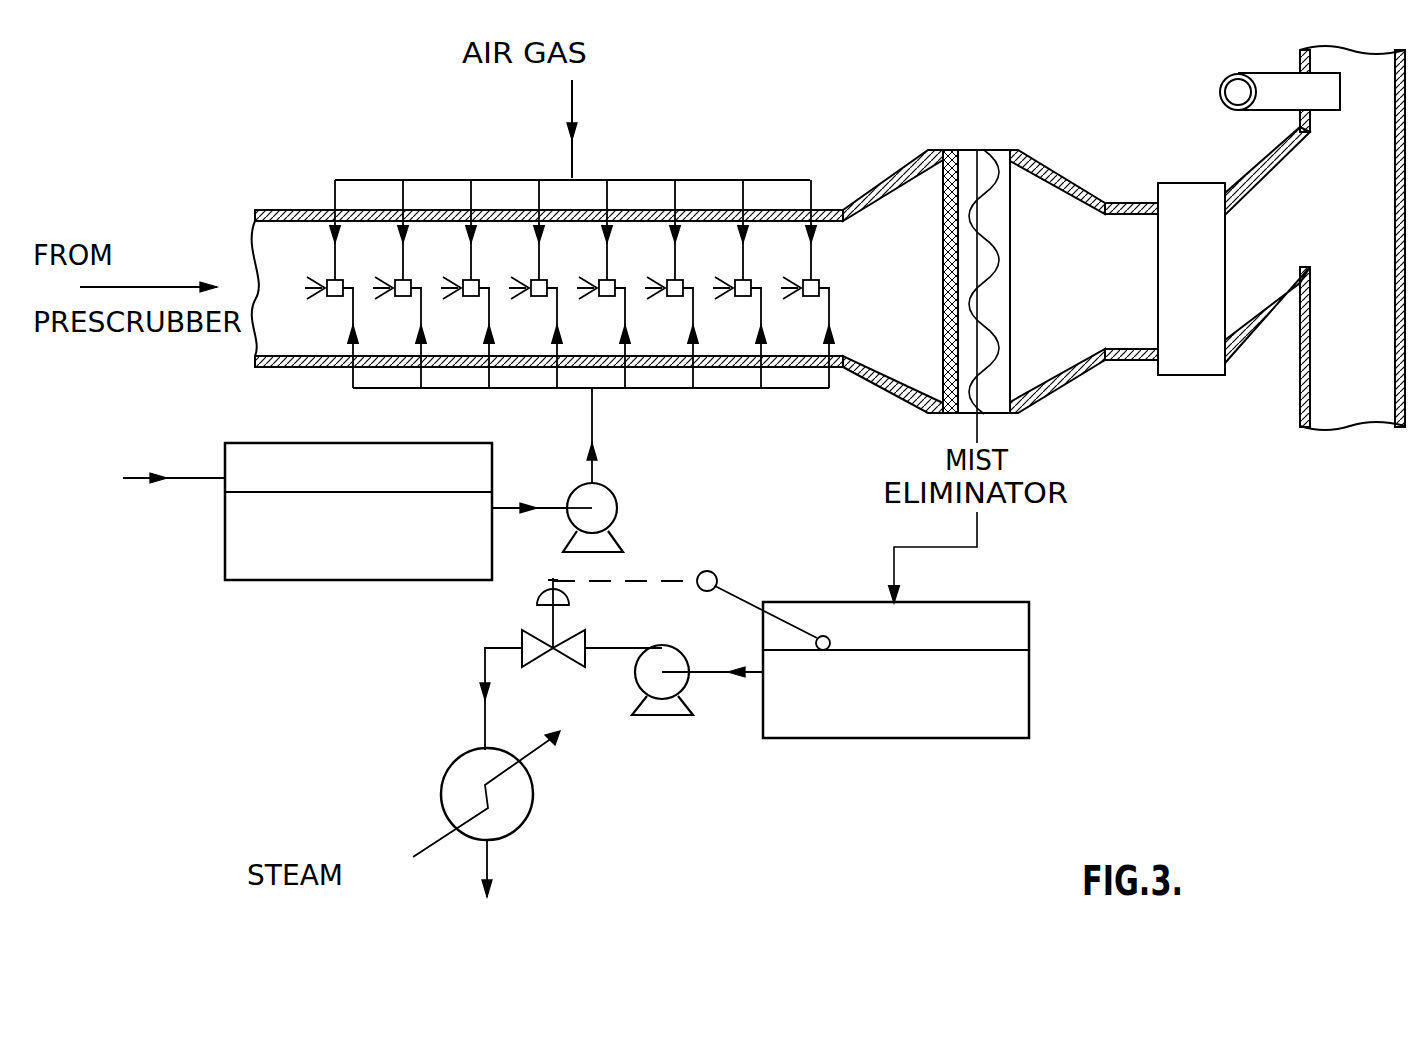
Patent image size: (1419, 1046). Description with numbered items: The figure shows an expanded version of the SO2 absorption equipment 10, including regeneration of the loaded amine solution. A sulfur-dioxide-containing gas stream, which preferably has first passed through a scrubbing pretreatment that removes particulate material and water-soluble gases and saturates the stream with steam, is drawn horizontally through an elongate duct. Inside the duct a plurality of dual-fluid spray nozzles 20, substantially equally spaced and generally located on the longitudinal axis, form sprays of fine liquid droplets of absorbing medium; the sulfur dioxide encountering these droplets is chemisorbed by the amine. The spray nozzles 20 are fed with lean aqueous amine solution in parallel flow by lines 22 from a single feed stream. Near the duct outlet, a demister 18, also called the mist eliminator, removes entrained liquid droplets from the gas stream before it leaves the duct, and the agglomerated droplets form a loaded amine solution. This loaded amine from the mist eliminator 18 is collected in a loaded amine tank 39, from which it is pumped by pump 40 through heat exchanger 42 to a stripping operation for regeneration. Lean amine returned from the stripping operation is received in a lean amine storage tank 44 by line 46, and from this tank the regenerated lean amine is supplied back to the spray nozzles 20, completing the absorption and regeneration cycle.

The equipment 10 is at (297, 163).
The demister 18 is at (993, 183).
The dual-fluid spray nozzles 20 is at (327, 283).
The lines 22 is at (353, 388).
The loaded amine tank to stripper 39 is at (1022, 727).
The pump 40 is at (662, 672).
The heat exchanger 42 is at (533, 787).
The lean amine storage tank 44 is at (420, 443).
The line 46 is at (187, 478).